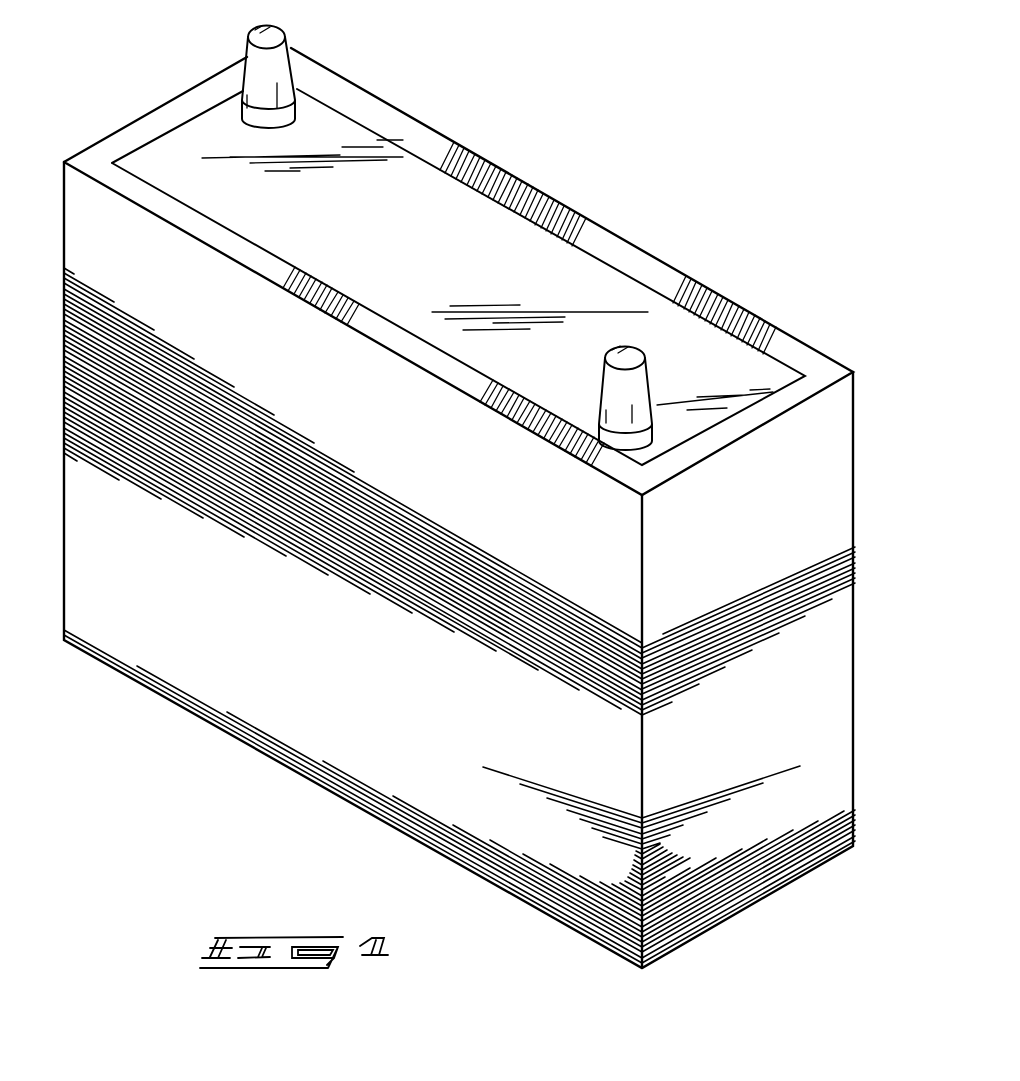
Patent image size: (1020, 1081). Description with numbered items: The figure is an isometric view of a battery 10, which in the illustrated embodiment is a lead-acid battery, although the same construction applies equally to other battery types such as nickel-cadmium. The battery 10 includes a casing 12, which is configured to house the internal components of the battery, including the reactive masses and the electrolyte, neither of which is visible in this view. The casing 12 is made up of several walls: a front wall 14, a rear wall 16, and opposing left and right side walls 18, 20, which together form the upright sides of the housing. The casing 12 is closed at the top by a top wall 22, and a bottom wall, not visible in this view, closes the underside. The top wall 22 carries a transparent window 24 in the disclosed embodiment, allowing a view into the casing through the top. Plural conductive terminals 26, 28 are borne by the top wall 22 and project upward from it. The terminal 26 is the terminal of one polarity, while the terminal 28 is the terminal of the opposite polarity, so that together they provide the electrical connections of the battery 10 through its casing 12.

The battery 10 is at (605, 100).
The casing 12 is at (858, 450).
The front wall 14 is at (292, 703).
The rear wall 16 is at (658, 275).
The left side wall 18 is at (133, 137).
The right side wall 20 is at (810, 720).
The top wall 22 is at (431, 259).
The transparent window 24 is at (372, 118).
The conductive terminal 26 is at (258, 80).
The conductive terminal 28 is at (612, 396).